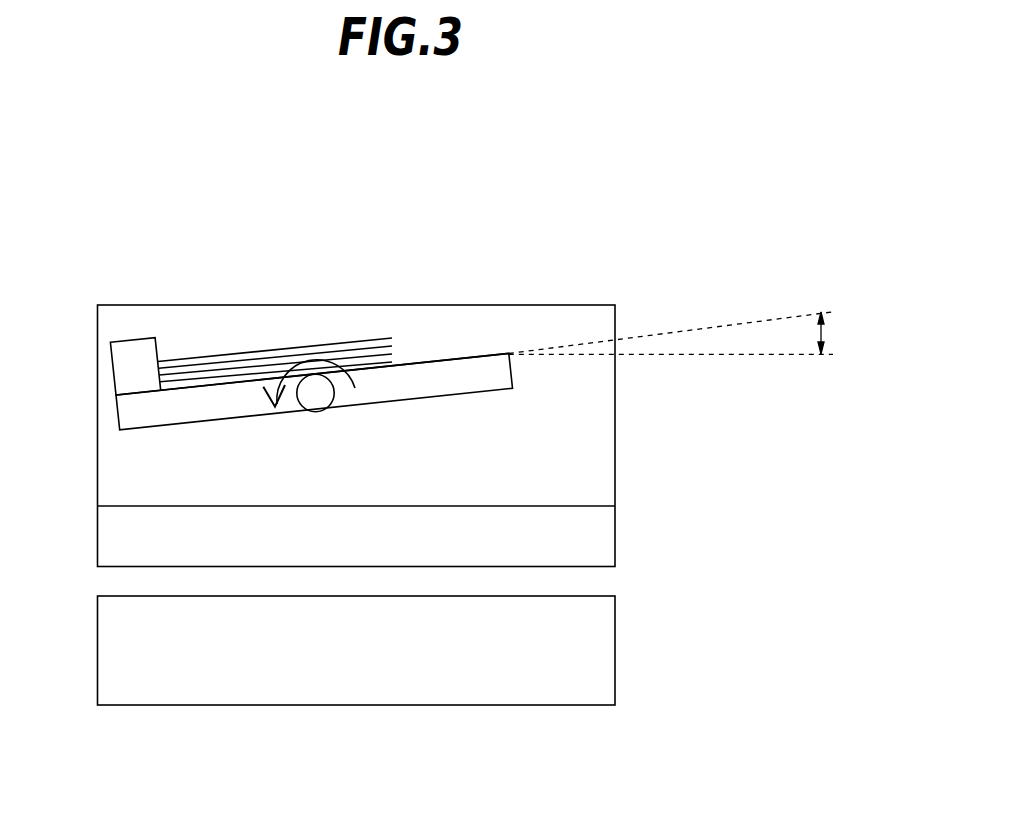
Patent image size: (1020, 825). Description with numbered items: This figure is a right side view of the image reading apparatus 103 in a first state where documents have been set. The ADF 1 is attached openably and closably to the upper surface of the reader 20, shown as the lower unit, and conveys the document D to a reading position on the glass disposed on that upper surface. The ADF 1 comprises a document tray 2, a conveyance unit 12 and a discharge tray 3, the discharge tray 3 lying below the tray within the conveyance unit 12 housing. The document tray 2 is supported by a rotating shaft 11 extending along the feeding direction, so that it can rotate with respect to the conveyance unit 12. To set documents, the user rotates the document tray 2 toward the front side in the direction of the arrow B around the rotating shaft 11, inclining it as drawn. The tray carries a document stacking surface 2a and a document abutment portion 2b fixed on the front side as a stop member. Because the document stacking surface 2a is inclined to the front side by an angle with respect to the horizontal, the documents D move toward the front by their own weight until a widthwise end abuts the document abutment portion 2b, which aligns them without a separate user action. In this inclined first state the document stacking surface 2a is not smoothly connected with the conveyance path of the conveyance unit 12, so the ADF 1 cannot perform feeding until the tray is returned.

The image reading apparatus 103 is at (402, 205).
The ADF 1 is at (172, 275).
The conveyance unit 12 is at (575, 304).
The discharge tray 3 is at (106, 540).
The document tray 2 is at (477, 353).
The document stacking surface 2a is at (423, 362).
The document abutment portion 2b is at (113, 377).
The document D is at (338, 342).
The arrow B is at (280, 367).
The rotating shaft 11 is at (316, 413).
The reader 20 is at (448, 706).